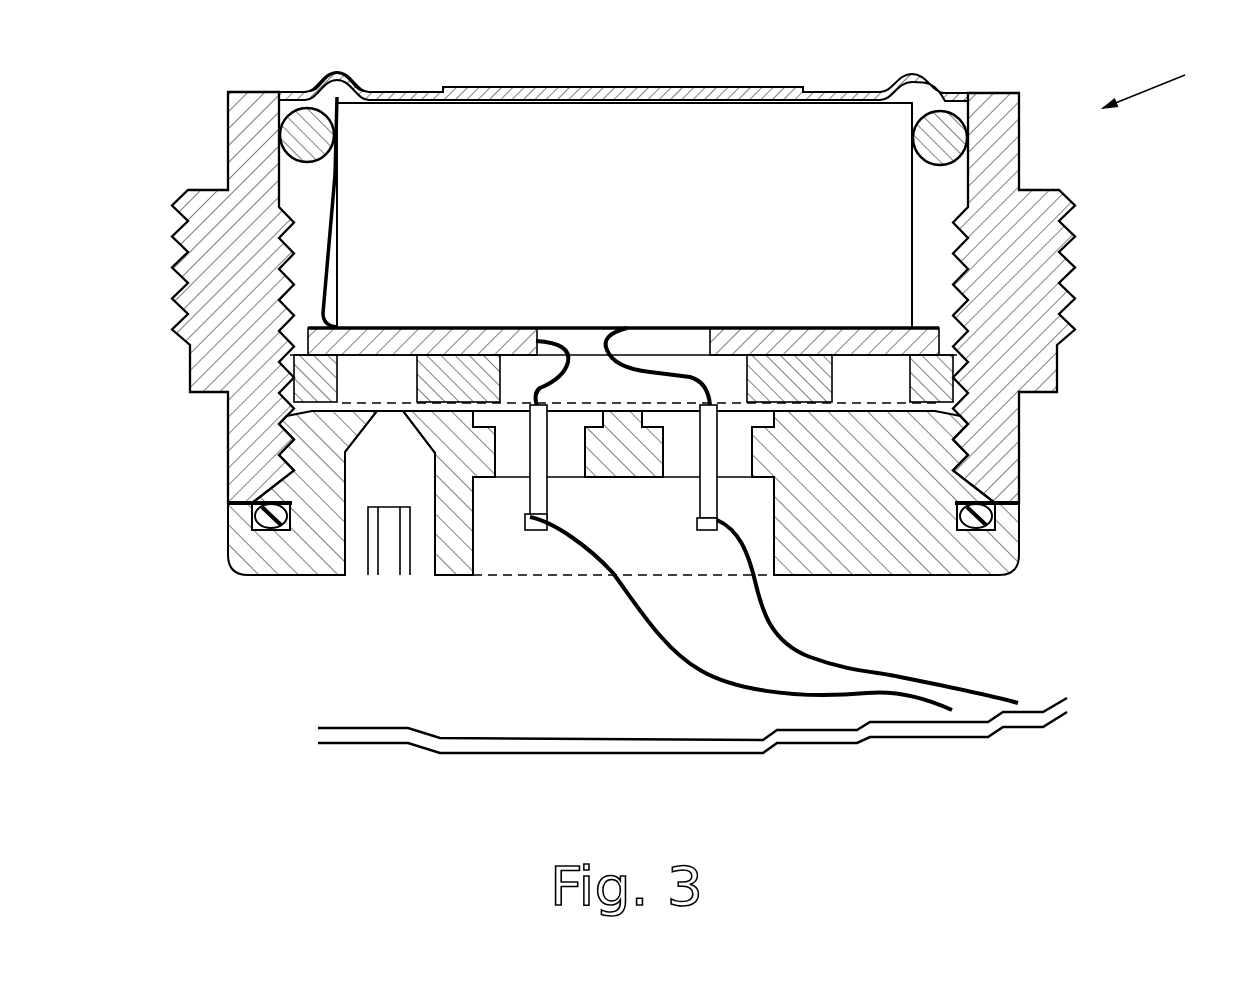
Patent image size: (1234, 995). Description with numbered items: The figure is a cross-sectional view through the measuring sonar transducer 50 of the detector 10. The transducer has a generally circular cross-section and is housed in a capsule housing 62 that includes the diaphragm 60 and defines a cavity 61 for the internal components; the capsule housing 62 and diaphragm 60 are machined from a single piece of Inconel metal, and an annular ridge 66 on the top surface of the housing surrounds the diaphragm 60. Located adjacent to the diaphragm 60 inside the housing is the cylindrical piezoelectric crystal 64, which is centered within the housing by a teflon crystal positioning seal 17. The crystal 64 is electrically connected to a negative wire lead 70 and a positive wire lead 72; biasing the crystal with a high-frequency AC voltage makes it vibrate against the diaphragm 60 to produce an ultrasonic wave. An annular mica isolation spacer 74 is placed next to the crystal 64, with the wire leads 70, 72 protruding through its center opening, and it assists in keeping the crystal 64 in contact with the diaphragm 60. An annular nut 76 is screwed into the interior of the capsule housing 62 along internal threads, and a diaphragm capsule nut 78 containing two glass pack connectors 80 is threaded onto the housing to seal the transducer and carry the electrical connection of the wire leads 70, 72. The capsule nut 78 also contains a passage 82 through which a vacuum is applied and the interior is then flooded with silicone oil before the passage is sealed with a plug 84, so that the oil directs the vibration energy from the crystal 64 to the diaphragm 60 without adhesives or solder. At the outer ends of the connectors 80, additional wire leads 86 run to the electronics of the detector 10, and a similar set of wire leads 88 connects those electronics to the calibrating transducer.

The sonar transducer 50 is at (1164, 83).
The diaphragm 60 is at (770, 87).
The capsule housing 62 is at (1020, 110).
The cavity 61 is at (945, 200).
The crystal 64 is at (622, 231).
The annular ridge 66 is at (340, 66).
The negative wire lead 70 is at (343, 103).
The crystal positioning seal 17 is at (958, 127).
The positive wire lead 72 is at (628, 322).
The isolation spacer 74 is at (930, 328).
The annular nut 76 is at (912, 390).
The plug 84 is at (397, 410).
The connectors 80 is at (563, 478).
The passage 82 is at (353, 575).
The diaphragm capsule nut 78 is at (262, 575).
The detector 10 is at (992, 520).
The additional wire leads 86 is at (910, 675).
The wire leads 88 is at (623, 740).